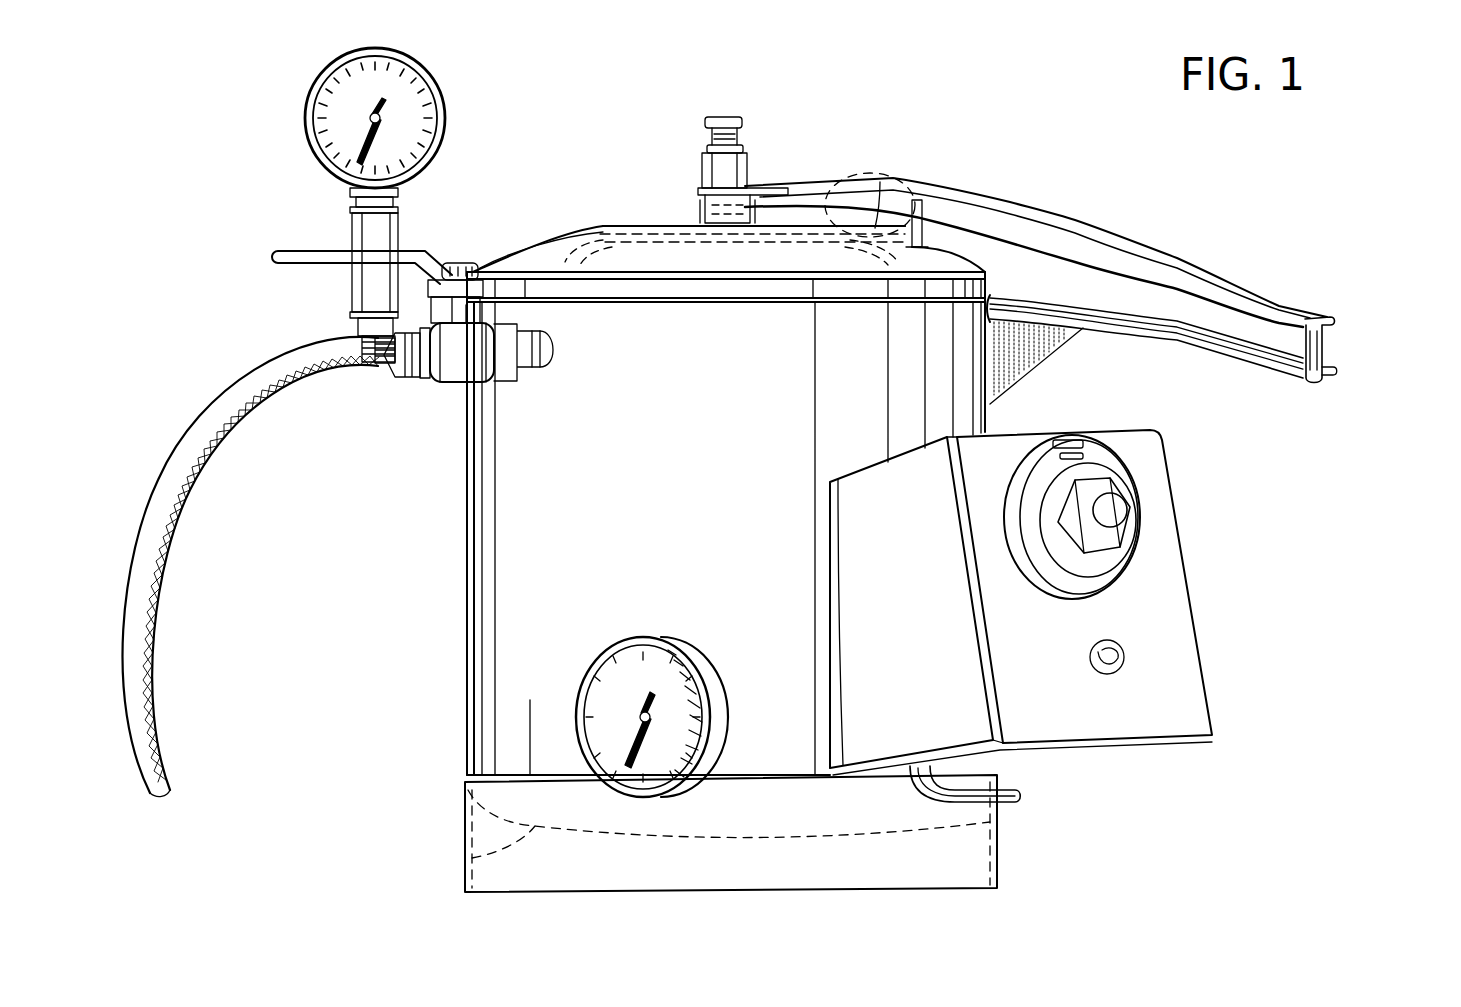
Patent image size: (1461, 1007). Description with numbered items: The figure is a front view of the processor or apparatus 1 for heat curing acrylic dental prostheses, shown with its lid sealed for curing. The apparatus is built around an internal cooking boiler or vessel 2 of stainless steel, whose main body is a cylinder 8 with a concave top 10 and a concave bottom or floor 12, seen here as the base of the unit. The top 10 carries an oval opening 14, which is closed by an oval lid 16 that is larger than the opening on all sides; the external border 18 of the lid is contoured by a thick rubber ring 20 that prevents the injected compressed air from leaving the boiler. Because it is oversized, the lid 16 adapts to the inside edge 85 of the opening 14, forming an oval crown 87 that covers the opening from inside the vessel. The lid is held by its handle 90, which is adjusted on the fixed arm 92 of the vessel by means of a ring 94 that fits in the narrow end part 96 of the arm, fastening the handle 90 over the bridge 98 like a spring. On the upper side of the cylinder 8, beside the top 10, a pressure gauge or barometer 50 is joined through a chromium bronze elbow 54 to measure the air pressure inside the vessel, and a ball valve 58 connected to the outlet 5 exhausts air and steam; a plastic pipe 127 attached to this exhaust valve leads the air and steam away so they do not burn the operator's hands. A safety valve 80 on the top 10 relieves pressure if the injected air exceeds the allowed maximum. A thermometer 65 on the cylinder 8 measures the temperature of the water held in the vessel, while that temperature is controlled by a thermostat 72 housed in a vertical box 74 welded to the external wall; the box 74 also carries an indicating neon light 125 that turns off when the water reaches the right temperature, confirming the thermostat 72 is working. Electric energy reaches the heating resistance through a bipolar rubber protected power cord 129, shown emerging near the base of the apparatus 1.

The processor or apparatus 1 is at (415, 565).
The internal cooking boiler or vessel 2 is at (480, 617).
The outlet 5 is at (525, 372).
The cylinder 8 is at (467, 512).
The top 10 is at (530, 250).
The bottom or floor 12 is at (472, 856).
The oval opening 14 is at (632, 225).
The oval lid 16 is at (665, 224).
The external border 18 is at (593, 236).
The ring 20 is at (563, 240).
The pressure gauge or barometer 50 is at (437, 72).
The chromium bronze elbow 54 is at (357, 330).
The ball valve 58 is at (470, 263).
The thermometer 65 is at (615, 652).
The thermostat 72 is at (1105, 465).
The vertical box 74 is at (1165, 575).
The safety valve 80 is at (745, 120).
The inside edge 85 is at (842, 220).
The oval crown 87 is at (880, 182).
The handle 90 is at (1078, 222).
The fixed arm 92 is at (1215, 352).
The ring 94 is at (1322, 363).
The narrow end part 96 is at (1333, 374).
The bridge 98 is at (920, 225).
The indicating neon light 125 is at (1125, 657).
The plastic pipe 127 is at (225, 432).
The power cord 129 is at (1000, 806).